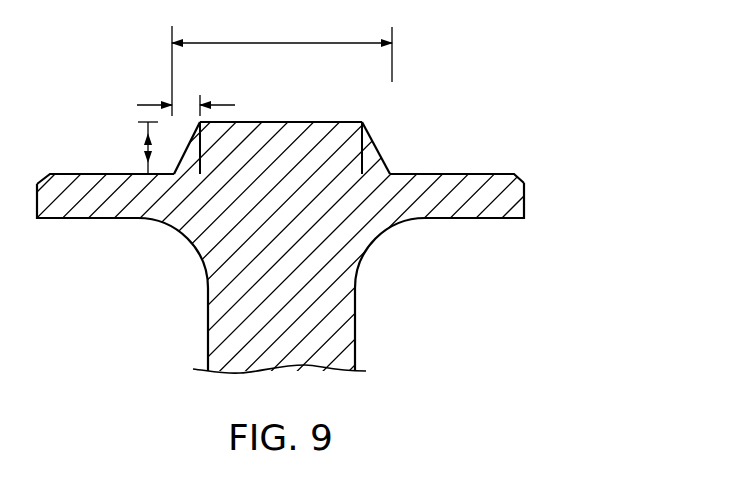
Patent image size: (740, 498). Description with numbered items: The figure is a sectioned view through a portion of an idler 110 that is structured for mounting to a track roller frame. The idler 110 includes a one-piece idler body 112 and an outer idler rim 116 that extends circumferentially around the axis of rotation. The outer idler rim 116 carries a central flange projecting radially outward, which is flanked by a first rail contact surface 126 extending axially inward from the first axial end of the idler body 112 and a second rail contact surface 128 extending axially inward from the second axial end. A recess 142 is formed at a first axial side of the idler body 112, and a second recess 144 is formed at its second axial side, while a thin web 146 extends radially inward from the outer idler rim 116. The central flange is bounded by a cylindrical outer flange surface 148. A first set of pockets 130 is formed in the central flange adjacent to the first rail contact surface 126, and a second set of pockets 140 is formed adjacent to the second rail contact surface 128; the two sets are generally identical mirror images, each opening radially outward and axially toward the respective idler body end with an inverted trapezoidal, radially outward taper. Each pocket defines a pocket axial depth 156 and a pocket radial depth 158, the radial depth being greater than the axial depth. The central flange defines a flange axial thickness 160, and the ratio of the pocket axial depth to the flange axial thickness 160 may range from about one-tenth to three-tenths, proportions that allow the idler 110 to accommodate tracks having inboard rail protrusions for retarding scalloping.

The idler 110 is at (606, 80).
The idler body 112 is at (524, 176).
The outer idler rim 116 is at (384, 108).
The first rail contact surface 126 is at (80, 174).
The second rail contact surface 128 is at (477, 174).
The first set of pockets 130 is at (190, 150).
The second set of pockets 140 is at (364, 146).
The recess 142 is at (92, 287).
The second recess 144 is at (473, 287).
The thin web 146 is at (332, 323).
The cylindrical outer flange surface 148 is at (320, 132).
The pocket axial depth 156 is at (148, 146).
The pocket radial depth 158 is at (183, 103).
The flange axial thickness 160 is at (273, 43).